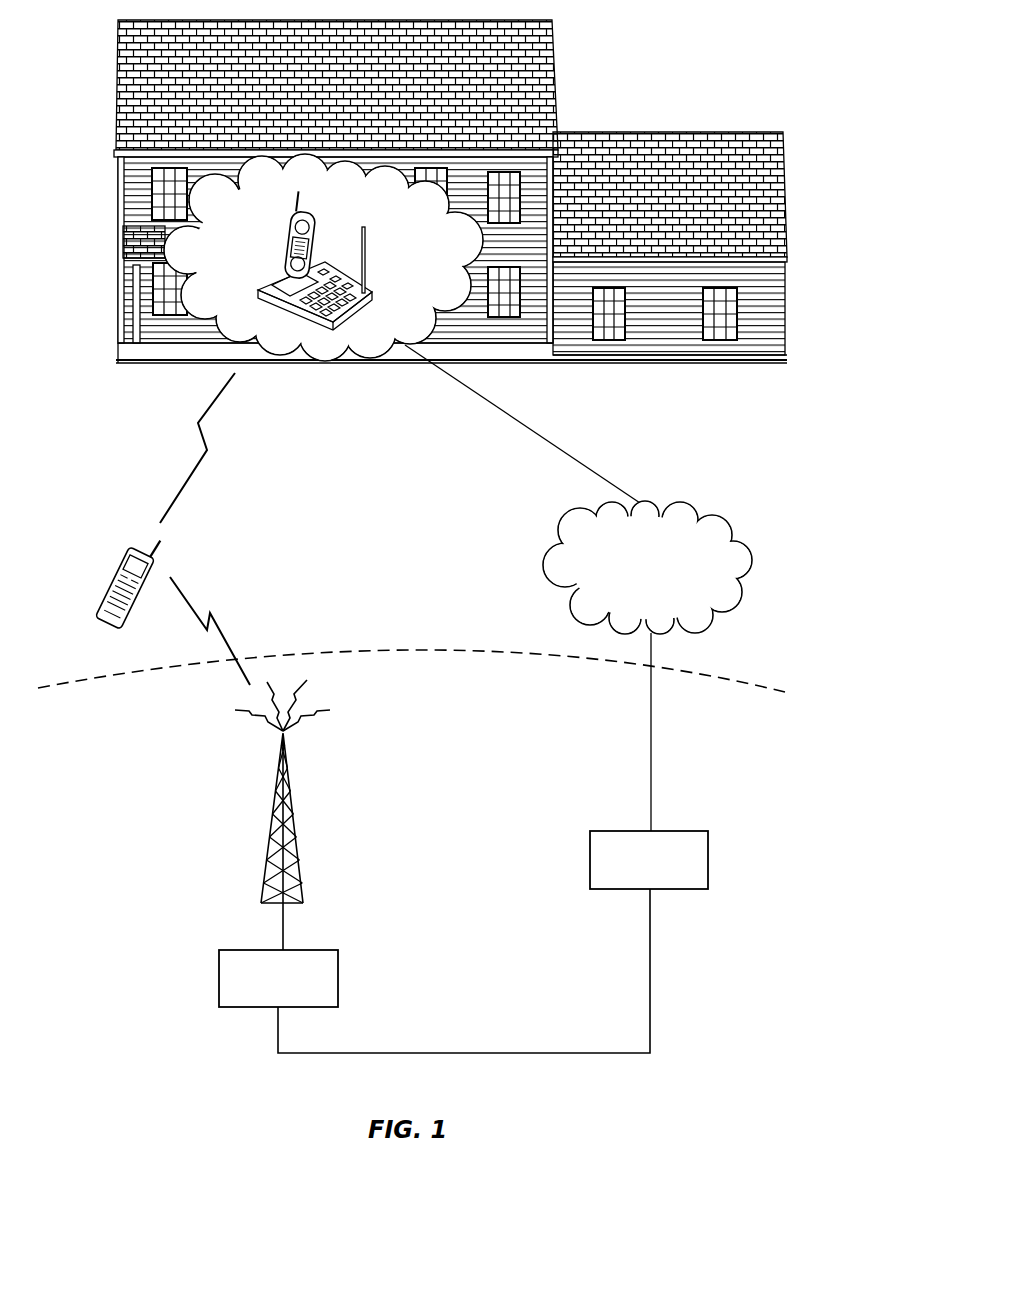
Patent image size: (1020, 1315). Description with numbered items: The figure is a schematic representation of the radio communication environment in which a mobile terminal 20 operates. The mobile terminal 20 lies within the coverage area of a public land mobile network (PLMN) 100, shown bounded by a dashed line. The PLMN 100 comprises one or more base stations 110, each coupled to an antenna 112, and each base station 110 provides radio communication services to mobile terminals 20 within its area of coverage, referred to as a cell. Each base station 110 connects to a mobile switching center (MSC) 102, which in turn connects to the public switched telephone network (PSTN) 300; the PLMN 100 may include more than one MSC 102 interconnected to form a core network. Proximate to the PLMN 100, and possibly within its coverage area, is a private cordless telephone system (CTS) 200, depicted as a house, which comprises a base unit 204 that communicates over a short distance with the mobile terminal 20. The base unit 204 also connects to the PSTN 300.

The private cordless telephone system (CTS) 200 is at (118, 230).
The mobile terminal 20 is at (288, 234).
The base unit 204 is at (368, 273).
The public switched telephone network (PSTN) 300 is at (676, 505).
The public land mobile network (PLMN) 100 is at (730, 681).
The antenna 112 is at (297, 821).
The base station 110 is at (318, 950).
The mobile switching center (MSC) 102 is at (688, 831).